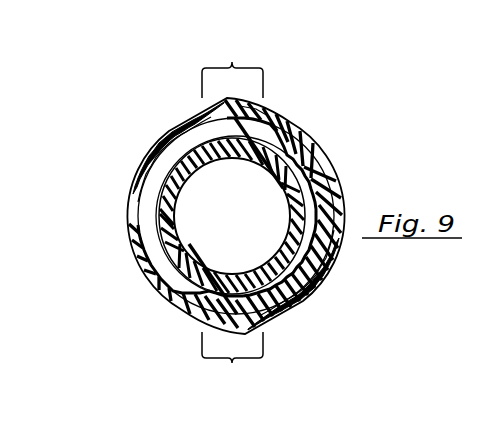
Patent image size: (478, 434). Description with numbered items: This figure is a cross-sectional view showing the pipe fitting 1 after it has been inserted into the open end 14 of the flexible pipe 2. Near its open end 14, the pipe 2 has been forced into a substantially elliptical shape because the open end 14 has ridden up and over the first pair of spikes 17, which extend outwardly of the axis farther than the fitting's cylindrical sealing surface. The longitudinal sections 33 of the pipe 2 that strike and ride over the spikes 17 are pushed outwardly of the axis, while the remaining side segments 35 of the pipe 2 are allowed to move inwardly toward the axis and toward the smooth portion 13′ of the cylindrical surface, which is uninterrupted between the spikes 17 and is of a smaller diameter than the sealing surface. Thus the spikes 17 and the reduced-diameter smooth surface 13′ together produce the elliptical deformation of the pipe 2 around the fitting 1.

The pipe fitting 1 is at (275, 192).
The flexible pipe 2 is at (320, 138).
The smooth portion of cylindrical surface 13′ is at (172, 310).
The open end of pipe 14 is at (170, 130).
The spikes 17 is at (265, 115).
The longitudinal sections of pipe 33 is at (232, 214).
The side segments of pipe 35 is at (310, 178).